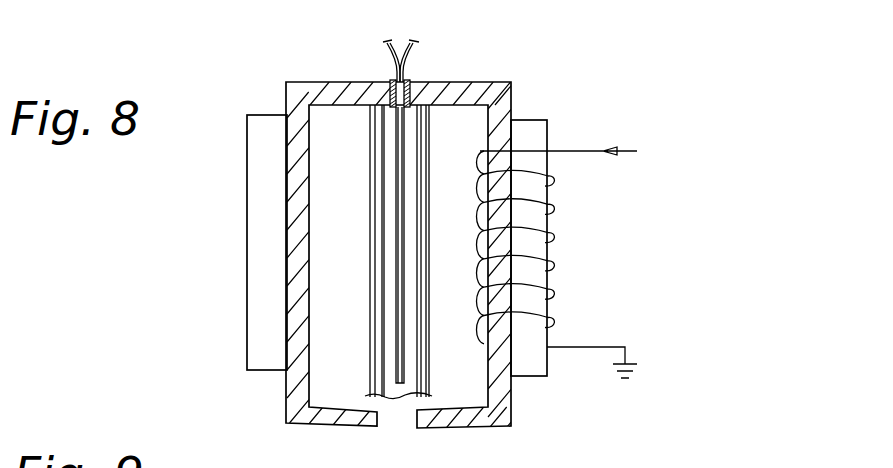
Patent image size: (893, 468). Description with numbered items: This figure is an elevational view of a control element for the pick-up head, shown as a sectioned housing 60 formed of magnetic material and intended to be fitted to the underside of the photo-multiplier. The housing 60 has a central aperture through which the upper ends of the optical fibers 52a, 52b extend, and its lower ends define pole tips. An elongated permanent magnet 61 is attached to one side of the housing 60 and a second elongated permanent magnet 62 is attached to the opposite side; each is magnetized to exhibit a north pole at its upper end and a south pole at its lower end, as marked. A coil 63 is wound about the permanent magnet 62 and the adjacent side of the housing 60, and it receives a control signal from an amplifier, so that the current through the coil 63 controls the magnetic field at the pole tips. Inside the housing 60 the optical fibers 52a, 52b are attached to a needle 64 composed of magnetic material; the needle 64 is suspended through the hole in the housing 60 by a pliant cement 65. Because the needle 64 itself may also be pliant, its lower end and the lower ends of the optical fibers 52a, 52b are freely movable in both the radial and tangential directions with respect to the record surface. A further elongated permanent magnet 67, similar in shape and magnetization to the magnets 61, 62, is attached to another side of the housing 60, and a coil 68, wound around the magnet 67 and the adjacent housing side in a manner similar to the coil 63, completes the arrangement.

The housing 60 is at (452, 386).
The elongated permanent magnet 61 is at (257, 180).
The second elongated permanent magnet 62 is at (543, 138).
The coil 63 is at (553, 265).
The needle 64 is at (400, 258).
The pliant cement 65 is at (408, 78).
The elongated permanent magnet 67 is at (418, 156).
The coil 68 is at (432, 195).
The optical fiber 52a is at (418, 50).
The optical fiber 52b is at (388, 55).